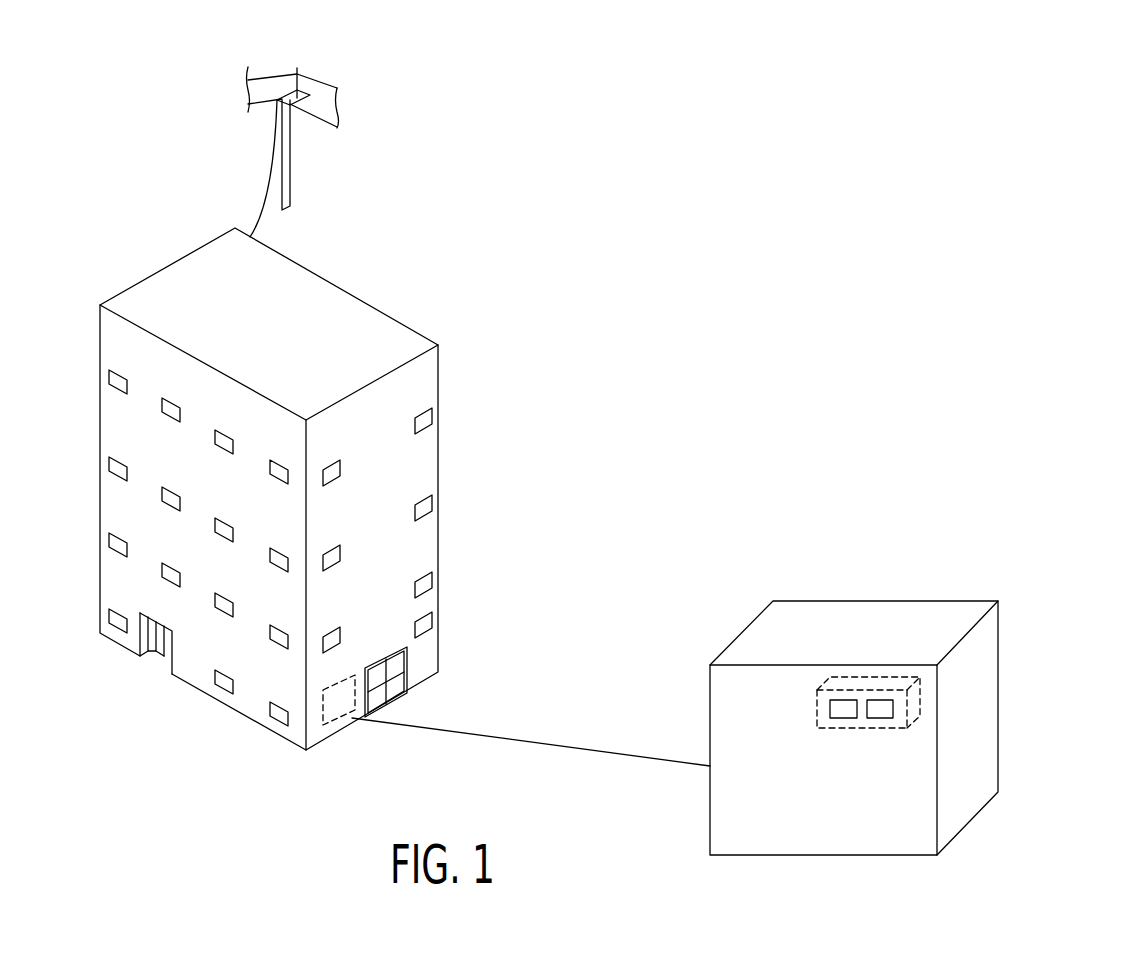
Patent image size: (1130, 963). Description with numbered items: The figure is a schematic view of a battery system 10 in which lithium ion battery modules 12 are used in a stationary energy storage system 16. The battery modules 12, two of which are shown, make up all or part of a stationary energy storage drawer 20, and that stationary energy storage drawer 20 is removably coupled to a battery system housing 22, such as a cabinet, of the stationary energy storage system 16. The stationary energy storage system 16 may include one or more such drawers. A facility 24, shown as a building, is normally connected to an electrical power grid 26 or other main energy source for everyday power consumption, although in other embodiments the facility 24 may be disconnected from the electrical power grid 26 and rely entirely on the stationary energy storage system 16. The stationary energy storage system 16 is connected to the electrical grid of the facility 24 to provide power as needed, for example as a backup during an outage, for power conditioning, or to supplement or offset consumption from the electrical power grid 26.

The battery system 10 is at (868, 330).
The battery module 12 is at (880, 700).
The stationary energy storage system 16 is at (742, 603).
The stationary energy storage drawer 20 is at (922, 693).
The battery system housing 22 is at (1000, 633).
The facility 24 is at (337, 288).
The electrical power grid 26 is at (322, 72).